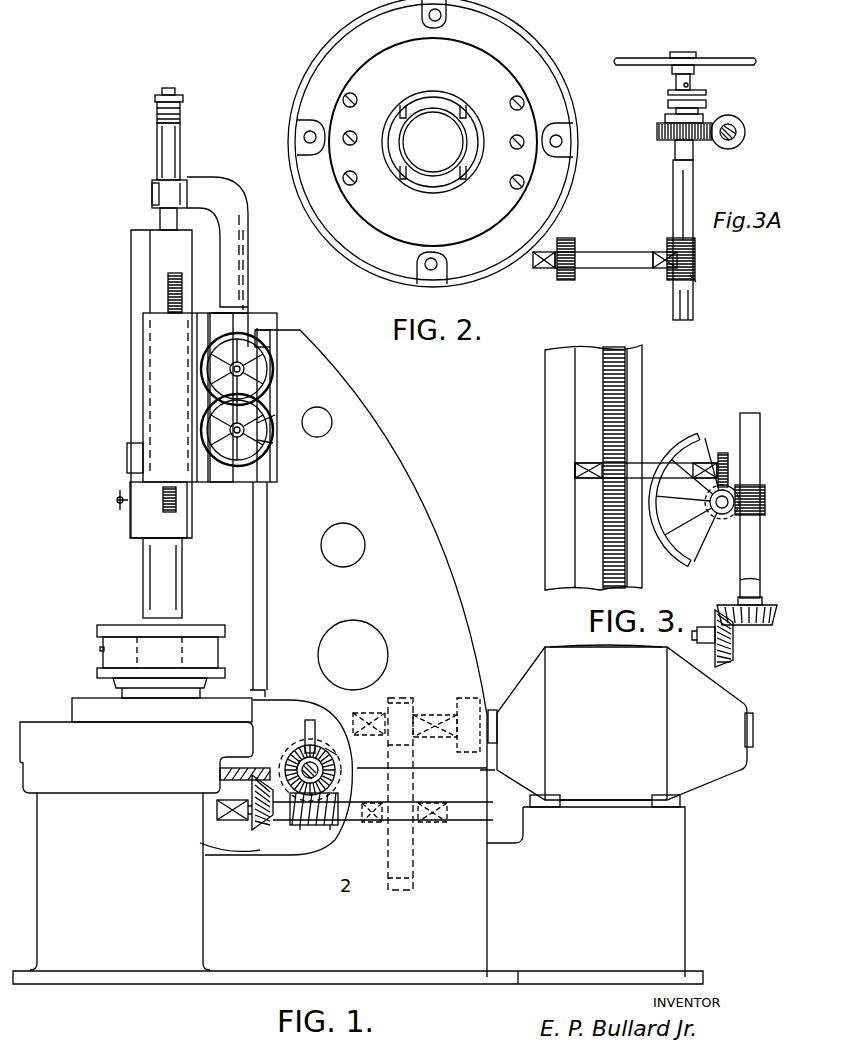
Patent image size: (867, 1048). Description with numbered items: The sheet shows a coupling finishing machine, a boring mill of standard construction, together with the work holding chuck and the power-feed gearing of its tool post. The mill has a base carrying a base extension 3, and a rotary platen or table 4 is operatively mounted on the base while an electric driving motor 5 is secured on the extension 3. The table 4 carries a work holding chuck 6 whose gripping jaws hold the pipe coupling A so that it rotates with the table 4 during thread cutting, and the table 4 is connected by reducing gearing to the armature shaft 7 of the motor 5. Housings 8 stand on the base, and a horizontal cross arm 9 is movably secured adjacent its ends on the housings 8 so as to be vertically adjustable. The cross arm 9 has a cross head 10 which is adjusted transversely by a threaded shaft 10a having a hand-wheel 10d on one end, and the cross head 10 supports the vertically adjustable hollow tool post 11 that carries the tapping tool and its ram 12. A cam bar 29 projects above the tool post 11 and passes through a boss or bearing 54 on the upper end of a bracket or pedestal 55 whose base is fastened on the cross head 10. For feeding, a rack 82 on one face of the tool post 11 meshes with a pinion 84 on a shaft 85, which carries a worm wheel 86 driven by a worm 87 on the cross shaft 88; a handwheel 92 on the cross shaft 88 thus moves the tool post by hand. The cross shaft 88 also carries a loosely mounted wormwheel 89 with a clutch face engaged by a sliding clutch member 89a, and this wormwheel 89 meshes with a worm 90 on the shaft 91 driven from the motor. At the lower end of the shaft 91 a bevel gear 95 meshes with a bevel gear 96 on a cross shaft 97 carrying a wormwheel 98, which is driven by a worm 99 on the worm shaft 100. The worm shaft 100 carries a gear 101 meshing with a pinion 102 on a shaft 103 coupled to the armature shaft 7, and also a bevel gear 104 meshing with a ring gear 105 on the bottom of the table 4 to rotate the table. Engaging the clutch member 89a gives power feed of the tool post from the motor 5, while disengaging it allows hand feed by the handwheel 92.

In FIG. 1, the base extension 3 is at (604, 892).
In FIG. 1, the rotary table 4 is at (358, 841).
In FIG. 1, the electric driving motor 5 is at (617, 726).
In FIG. 1, the work holding chuck 6 is at (113, 641).
In FIG. 2, the work holding chuck 6 is at (435, 142).
In FIG. 1, the armature shaft 7 is at (753, 728).
In FIG. 1, the housing 8 is at (422, 502).
In FIG. 1, the cross arm 9 is at (233, 467).
In FIG. 1, the cross head 10 is at (175, 411).
In FIG. 1, the threaded shaft 10a is at (257, 423).
In FIG. 1, the hand-wheel 10d is at (273, 443).
In FIG. 1, the tool post 11 is at (158, 266).
In FIG. 3, the tool post 11 is at (635, 373).
In FIG. 1, the ram 12 is at (182, 565).
In FIG. 1, the rod 29 is at (180, 157).
In FIG. 1, the boss or bearing 54 is at (152, 195).
In FIG. 1, the bracket or pedestal 55 is at (238, 250).
In FIG. 1, the rack 82 is at (168, 298).
In FIG. 3A, the rack 82 is at (570, 238).
In FIG. 3, the rack 82 is at (625, 402).
In FIG. 3A, the pinion 84 is at (570, 280).
In FIG. 3, the pinion 84 is at (627, 460).
In FIG. 3A, the shaft 85 is at (622, 270).
In FIG. 3, the shaft 85 is at (673, 448).
In FIG. 3A, the worm wheel 86 is at (690, 278).
In FIG. 3, the worm wheel 86 is at (722, 453).
In FIG. 3A, the worm 87 is at (695, 268).
In FIG. 3, the worm 87 is at (730, 487).
In FIG. 1, the cross shaft 88 is at (240, 365).
In FIG. 3A, the cross shaft 88 is at (693, 190).
In FIG. 3, the cross shaft 88 is at (720, 510).
In FIG. 3A, the wormwheel 89 is at (653, 133).
In FIG. 3, the wormwheel 89 is at (705, 498).
In FIG. 3A, the sliding clutch member 89a is at (667, 92).
In FIG. 3A, the worm 90 is at (746, 144).
In FIG. 3, the worm 90 is at (763, 503).
In FIG. 1, the shaft 91 is at (305, 727).
In FIG. 3A, the shaft 91 is at (737, 127).
In FIG. 3, the shaft 91 is at (753, 568).
In FIG. 1, the handwheel 92 is at (274, 370).
In FIG. 3A, the handwheel 92 is at (750, 62).
In FIG. 3, the handwheel 92 is at (693, 563).
In FIG. 1, the bevel gear 95 is at (327, 747).
In FIG. 3, the bevel gear 95 is at (773, 620).
In FIG. 1, the bevel gear 96 is at (337, 770).
In FIG. 3, the bevel gear 96 is at (737, 660).
In FIG. 1, the cross shaft 97 is at (300, 760).
In FIG. 3, the cross shaft 97 is at (705, 627).
In FIG. 1, the wormwheel 98 is at (338, 810).
In FIG. 1, the worm 99 is at (320, 828).
In FIG. 1, the worm shaft 100 is at (283, 823).
In FIG. 1, the gear 101 is at (413, 873).
In FIG. 1, the pinion 102 is at (418, 700).
In FIG. 1, the shaft 103 is at (422, 733).
In FIG. 1, the bevel gear 104 is at (262, 823).
In FIG. 1, the ring gear 105 is at (248, 782).
In FIG. 2, the pipe coupling A is at (404, 140).